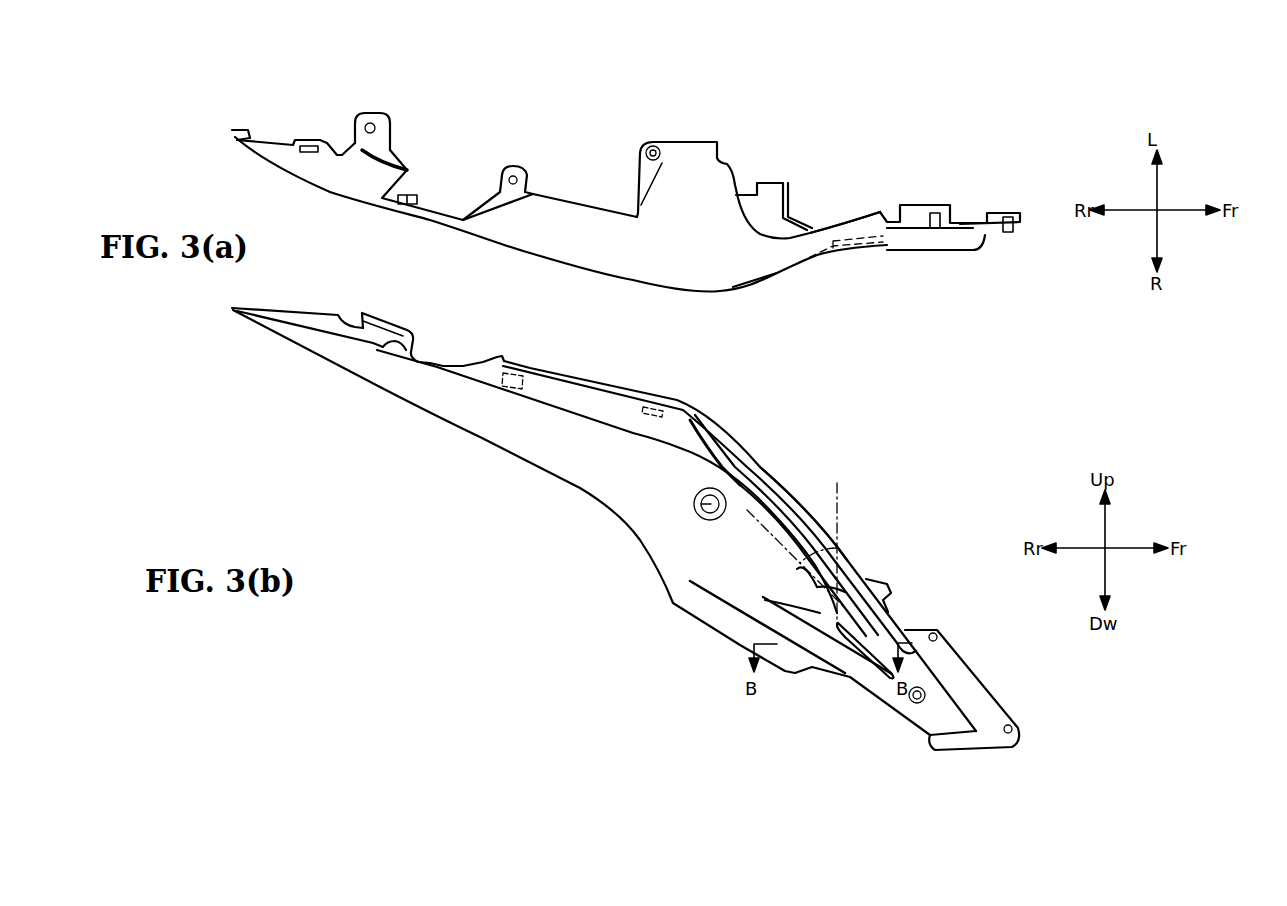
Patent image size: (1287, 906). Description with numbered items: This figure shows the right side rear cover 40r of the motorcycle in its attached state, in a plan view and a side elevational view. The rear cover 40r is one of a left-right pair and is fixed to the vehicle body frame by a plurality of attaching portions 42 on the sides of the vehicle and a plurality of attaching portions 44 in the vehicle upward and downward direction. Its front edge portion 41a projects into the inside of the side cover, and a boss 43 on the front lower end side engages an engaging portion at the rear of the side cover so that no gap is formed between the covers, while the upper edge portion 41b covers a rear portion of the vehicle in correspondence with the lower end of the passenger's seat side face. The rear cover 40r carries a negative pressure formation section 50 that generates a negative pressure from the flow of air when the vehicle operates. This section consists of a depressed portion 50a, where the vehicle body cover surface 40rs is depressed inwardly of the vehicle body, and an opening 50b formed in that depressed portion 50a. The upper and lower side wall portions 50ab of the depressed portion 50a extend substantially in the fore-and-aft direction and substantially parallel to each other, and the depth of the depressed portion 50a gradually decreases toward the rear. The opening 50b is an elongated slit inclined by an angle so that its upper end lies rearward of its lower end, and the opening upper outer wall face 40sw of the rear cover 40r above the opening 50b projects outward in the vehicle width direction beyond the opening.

In FIG. 3A, the rear cover 40r is at (829, 153).
In FIG. 3B, the rear cover 40r is at (830, 465).
In FIG. 3A, the vehicle body cover surface 40rs is at (790, 273).
In FIG. 3B, the vehicle body cover surface 40rs is at (780, 582).
In FIG. 3B, the opening upper outer wall face 40sw is at (888, 583).
In FIG. 3A, the front edge portion 41a is at (853, 212).
In FIG. 3B, the front edge portion 41a is at (810, 533).
In FIG. 3A, the upper edge portion 41b is at (540, 194).
In FIG. 3B, the attaching portion 42 is at (706, 504).
In FIG. 3A, the boss 43 is at (927, 232).
In FIG. 3B, the boss 43 is at (945, 633).
In FIG. 3A, the attaching portion 44 is at (373, 124).
In FIG. 3A, the negative pressure formation section 50 is at (841, 293).
In FIG. 3B, the negative pressure formation section 50 is at (874, 621).
In FIG. 3A, the depressed portion 50a is at (827, 248).
In FIG. 3B, the depressed portion 50a is at (832, 653).
In FIG. 3A, the opening 50b is at (863, 241).
In FIG. 3B, the opening 50b is at (888, 610).
In FIG. 3B, the upper and lower side wall portions 50ab is at (823, 575).